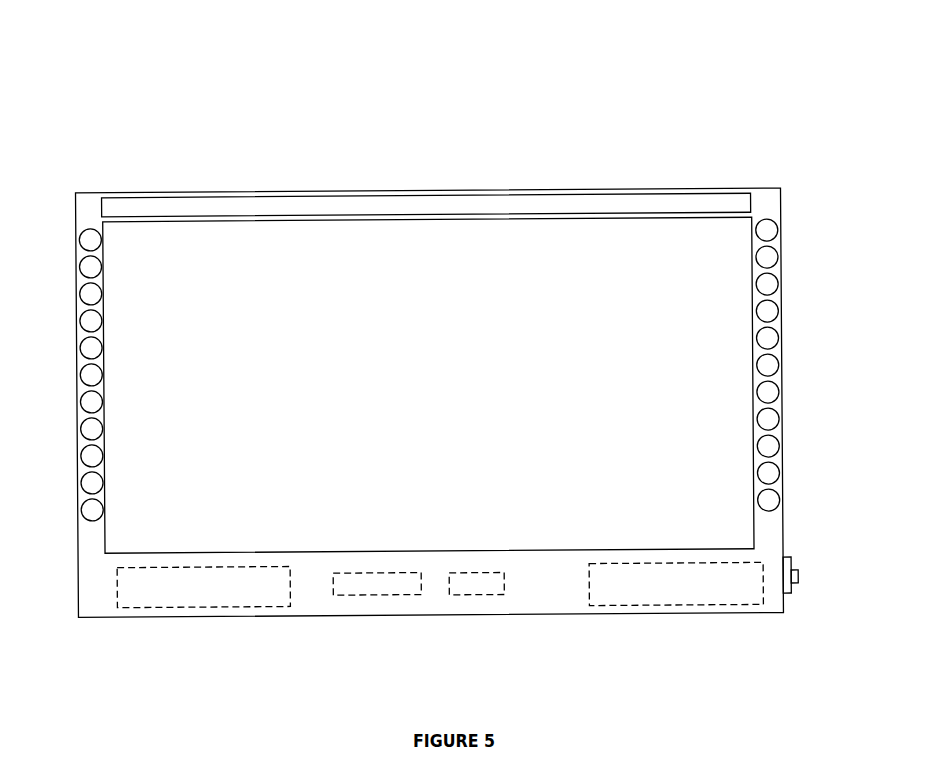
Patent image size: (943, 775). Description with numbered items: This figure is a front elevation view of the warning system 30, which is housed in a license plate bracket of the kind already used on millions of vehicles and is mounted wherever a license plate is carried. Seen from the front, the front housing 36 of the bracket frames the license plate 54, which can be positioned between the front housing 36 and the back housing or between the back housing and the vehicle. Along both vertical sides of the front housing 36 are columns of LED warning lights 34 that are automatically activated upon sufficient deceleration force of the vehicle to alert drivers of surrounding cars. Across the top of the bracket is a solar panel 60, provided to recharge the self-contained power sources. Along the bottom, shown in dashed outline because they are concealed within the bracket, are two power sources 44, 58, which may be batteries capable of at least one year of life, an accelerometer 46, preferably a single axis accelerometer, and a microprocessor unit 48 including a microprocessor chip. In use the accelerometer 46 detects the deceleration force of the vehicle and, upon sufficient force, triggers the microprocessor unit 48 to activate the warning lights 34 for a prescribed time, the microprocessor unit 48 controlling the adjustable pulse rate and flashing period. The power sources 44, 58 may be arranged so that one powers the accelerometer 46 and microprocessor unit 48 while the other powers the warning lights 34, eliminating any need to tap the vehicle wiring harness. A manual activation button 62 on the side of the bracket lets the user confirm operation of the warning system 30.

The warning system 30 is at (430, 133).
The warning lights 34 is at (88, 373).
The front housing 36 is at (766, 203).
The power source 44 is at (191, 590).
The accelerometer 46 is at (370, 582).
The microprocessor unit 48 is at (483, 586).
The license plate 54 is at (558, 395).
The power source 58 is at (692, 585).
The solar panel 60 is at (124, 207).
The manual activation button 62 is at (797, 578).